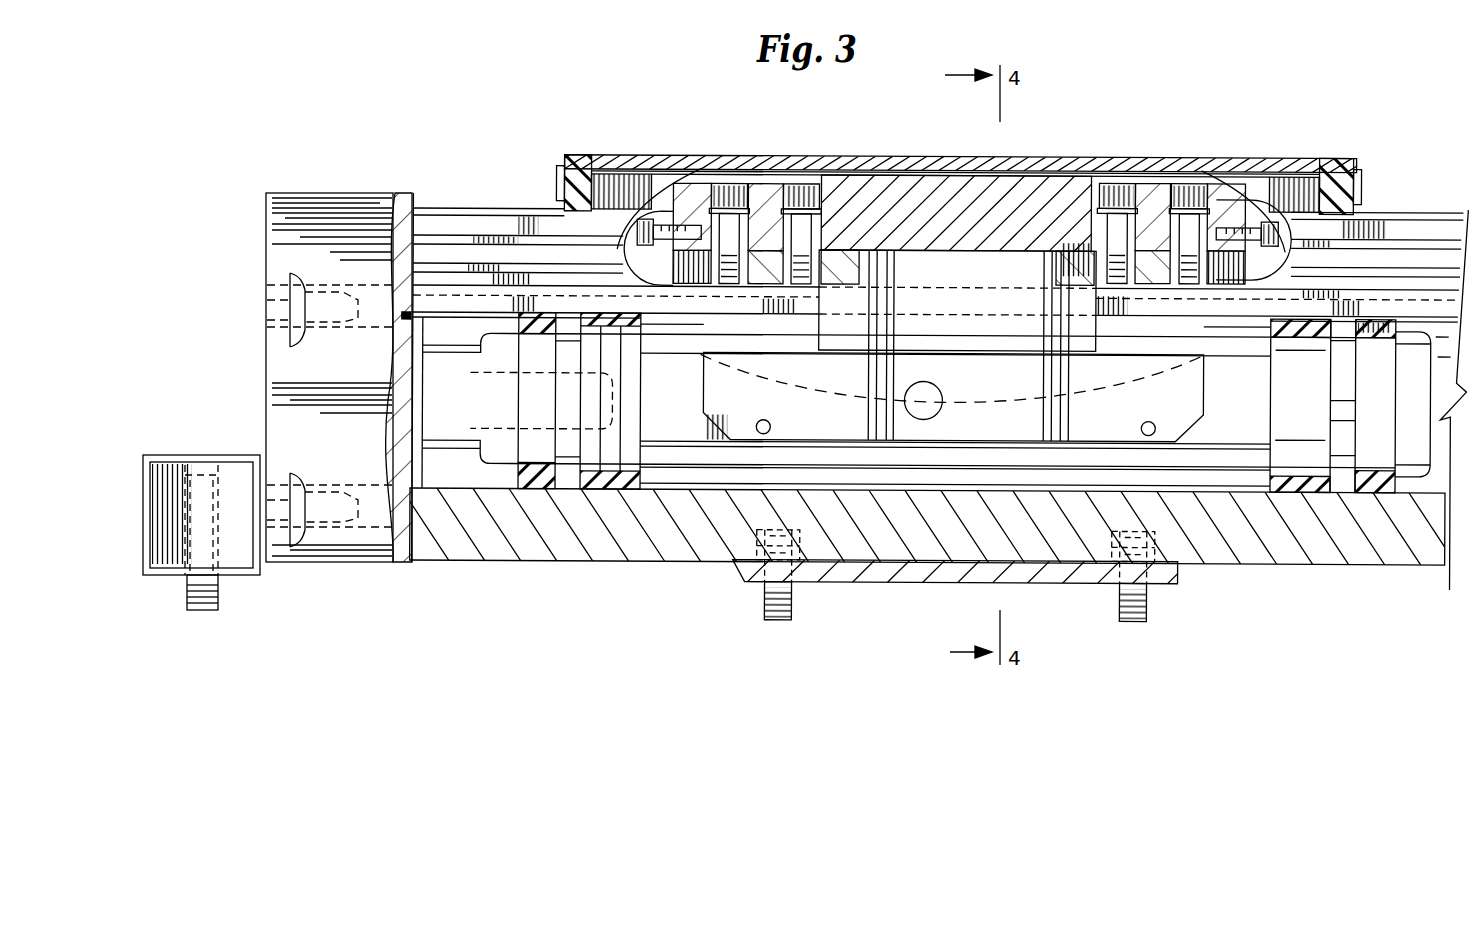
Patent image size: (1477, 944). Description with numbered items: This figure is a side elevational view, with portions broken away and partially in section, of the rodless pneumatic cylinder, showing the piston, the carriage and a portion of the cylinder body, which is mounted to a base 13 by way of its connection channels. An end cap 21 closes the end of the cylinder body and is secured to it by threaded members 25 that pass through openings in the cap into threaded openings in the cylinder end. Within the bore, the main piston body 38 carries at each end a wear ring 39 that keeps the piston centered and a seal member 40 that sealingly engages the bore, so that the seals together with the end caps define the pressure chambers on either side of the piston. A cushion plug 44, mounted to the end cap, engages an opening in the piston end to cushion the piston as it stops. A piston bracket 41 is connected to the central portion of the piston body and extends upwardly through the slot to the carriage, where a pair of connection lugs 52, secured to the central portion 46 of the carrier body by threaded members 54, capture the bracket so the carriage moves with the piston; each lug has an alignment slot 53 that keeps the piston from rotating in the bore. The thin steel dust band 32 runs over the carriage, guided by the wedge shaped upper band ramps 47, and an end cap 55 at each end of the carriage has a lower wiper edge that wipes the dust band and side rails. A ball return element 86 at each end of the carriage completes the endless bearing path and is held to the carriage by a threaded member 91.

The base 13 is at (1053, 578).
The end cap 21 is at (302, 207).
The threaded member 25 is at (263, 314).
The dust band 32 is at (673, 175).
The main piston body 38 is at (873, 470).
The wear ring 39 is at (608, 488).
The seal member 40 is at (537, 483).
The piston bracket 41 is at (995, 320).
The cushion plug 44 is at (453, 417).
The central portion 46 is at (978, 185).
The upper band ramp 47 is at (700, 183).
The connection lug 52 is at (825, 183).
The alignment slot 53 is at (1062, 265).
The threaded member 54 is at (735, 183).
The end cap 55 is at (563, 200).
The ball return element 86 is at (660, 210).
The threaded member 91 is at (590, 154).